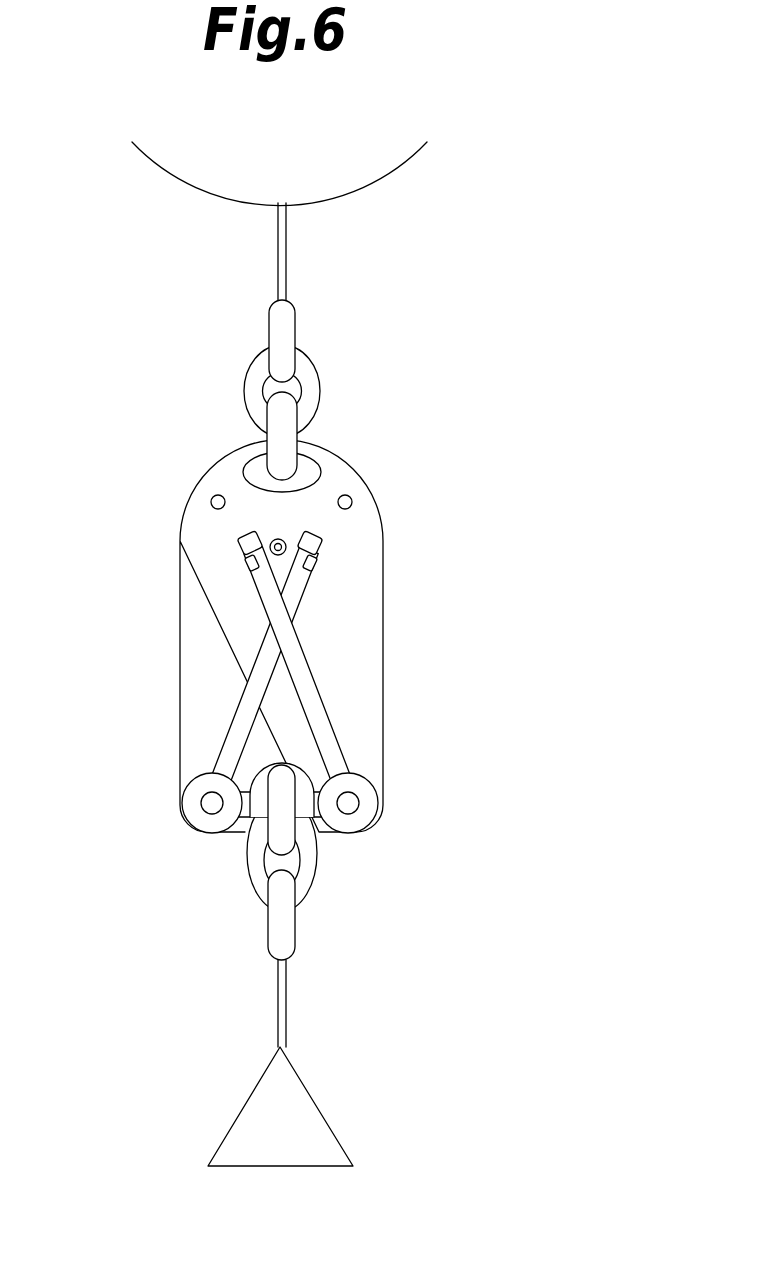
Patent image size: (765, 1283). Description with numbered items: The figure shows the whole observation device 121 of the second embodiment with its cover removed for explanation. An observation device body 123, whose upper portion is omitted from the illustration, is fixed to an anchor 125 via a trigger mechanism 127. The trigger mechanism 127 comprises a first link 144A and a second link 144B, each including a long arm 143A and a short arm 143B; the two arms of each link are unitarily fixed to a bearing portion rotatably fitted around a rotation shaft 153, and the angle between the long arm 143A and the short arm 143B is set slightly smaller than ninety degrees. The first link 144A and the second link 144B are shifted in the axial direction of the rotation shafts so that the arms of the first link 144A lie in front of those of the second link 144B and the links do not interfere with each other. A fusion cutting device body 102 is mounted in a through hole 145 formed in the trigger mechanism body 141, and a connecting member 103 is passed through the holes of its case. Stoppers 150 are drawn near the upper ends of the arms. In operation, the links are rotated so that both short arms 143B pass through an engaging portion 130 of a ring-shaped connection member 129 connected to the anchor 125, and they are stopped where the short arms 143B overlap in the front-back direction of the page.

The observation device body 123 is at (352, 190).
The observation device 121 is at (329, 674).
The trigger mechanism 127 is at (292, 676).
The trigger mechanism body 141 is at (177, 575).
The fusion cutting device body 102 is at (285, 540).
The through hole 145 is at (272, 538).
The stopper 150 is at (238, 533).
The connecting member 103 is at (262, 550).
The long arm 143A is at (233, 745).
The short arm 143B is at (250, 808).
The engaging portion 130 is at (296, 787).
The first link 144A is at (197, 817).
The second link 144B is at (373, 800).
The rotation shaft 153 is at (213, 813).
The connection member 129 is at (288, 990).
The anchor 125 is at (318, 1102).